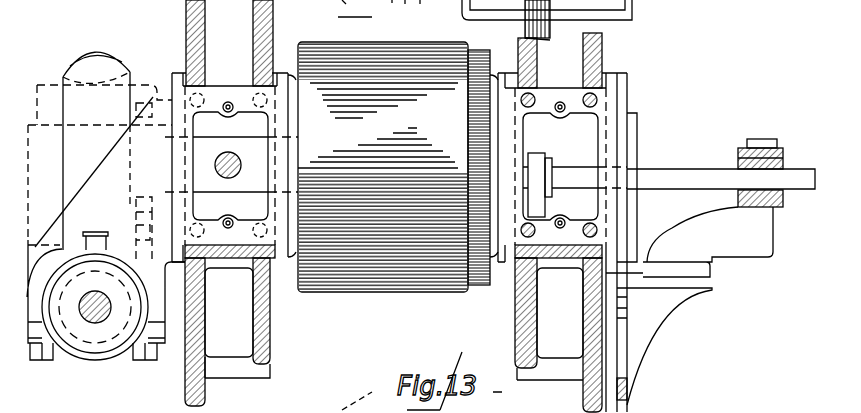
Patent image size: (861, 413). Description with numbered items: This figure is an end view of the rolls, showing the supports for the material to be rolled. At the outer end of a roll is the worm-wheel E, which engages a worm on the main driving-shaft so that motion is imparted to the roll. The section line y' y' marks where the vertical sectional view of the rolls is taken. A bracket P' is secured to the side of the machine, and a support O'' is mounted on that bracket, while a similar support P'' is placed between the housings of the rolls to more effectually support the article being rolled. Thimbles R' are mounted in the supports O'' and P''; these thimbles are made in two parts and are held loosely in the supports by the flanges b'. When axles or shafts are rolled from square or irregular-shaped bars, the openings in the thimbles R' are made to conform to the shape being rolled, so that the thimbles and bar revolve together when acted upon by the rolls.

The worm-wheel E is at (96, 139).
The section line y' y' is at (548, 25).
The flange b' is at (669, 173).
The support P'' is at (564, 171).
The thimble R' is at (683, 169).
The support O'' is at (708, 242).
The bracket P' is at (664, 346).